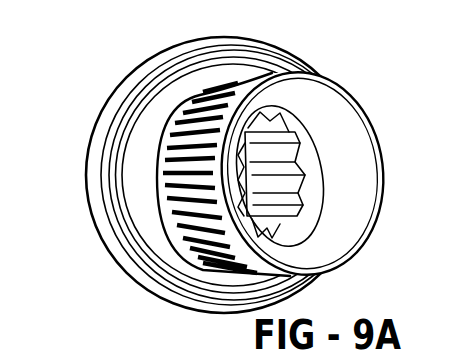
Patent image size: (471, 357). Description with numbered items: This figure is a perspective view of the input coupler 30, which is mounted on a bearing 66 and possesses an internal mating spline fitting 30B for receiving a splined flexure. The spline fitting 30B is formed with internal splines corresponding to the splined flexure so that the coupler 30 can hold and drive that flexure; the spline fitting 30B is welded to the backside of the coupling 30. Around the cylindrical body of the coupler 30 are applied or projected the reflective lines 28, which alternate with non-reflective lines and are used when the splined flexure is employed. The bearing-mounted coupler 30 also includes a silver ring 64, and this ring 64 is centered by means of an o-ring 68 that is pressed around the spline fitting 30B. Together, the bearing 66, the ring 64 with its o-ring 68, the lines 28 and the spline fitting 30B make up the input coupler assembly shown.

The reflective lines 28 is at (215, 87).
The input coupler 30 is at (143, 229).
The spline fitting 30B is at (288, 215).
The silver ring 64 is at (236, 44).
The bearing 66 is at (108, 112).
The o-ring 68 is at (108, 175).